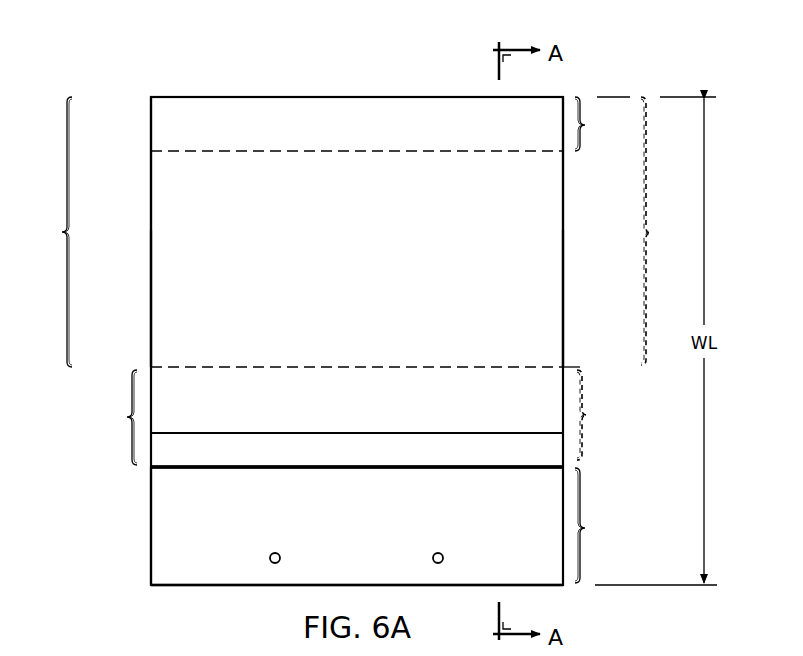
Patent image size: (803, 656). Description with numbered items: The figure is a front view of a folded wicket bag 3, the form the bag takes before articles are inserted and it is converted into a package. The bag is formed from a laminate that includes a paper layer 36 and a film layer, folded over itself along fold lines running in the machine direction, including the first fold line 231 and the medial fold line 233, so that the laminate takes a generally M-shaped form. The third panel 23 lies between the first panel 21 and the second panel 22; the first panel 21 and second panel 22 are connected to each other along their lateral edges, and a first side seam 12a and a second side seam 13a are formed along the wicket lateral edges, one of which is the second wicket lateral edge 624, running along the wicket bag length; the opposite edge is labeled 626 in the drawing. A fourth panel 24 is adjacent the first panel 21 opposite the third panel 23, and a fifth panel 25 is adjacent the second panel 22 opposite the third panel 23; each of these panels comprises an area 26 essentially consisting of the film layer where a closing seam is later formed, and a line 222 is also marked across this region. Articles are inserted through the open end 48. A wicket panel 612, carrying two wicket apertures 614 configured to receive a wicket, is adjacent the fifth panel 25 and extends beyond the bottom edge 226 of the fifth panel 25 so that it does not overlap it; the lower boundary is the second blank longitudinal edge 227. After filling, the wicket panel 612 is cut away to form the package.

The wicket bag 3 is at (213, 70).
The first fold line 231 is at (325, 96).
The medial fold line 233 is at (337, 153).
The third panel 23 is at (595, 124).
The first panel 21 is at (51, 232).
The second panel 22 is at (662, 231).
The first side seam 12a is at (151, 228).
The second side seam 13a is at (563, 228).
The first side seam 626 is at (151, 293).
The second wicket lateral edge 624 is at (563, 293).
The fourth panel 24 is at (328, 416).
The fifth panel 25 is at (591, 413).
The elastic band 222 is at (357, 432).
The area essentially consisting of the film layer 26 is at (275, 458).
The open end 48 is at (341, 470).
The first blank longitudinal edge 226 is at (398, 469).
The paper layer 36 is at (157, 527).
The wicket aperture 614 is at (270, 557).
The wicket panel 612 is at (603, 525).
The second blank longitudinal edge 227 is at (215, 588).